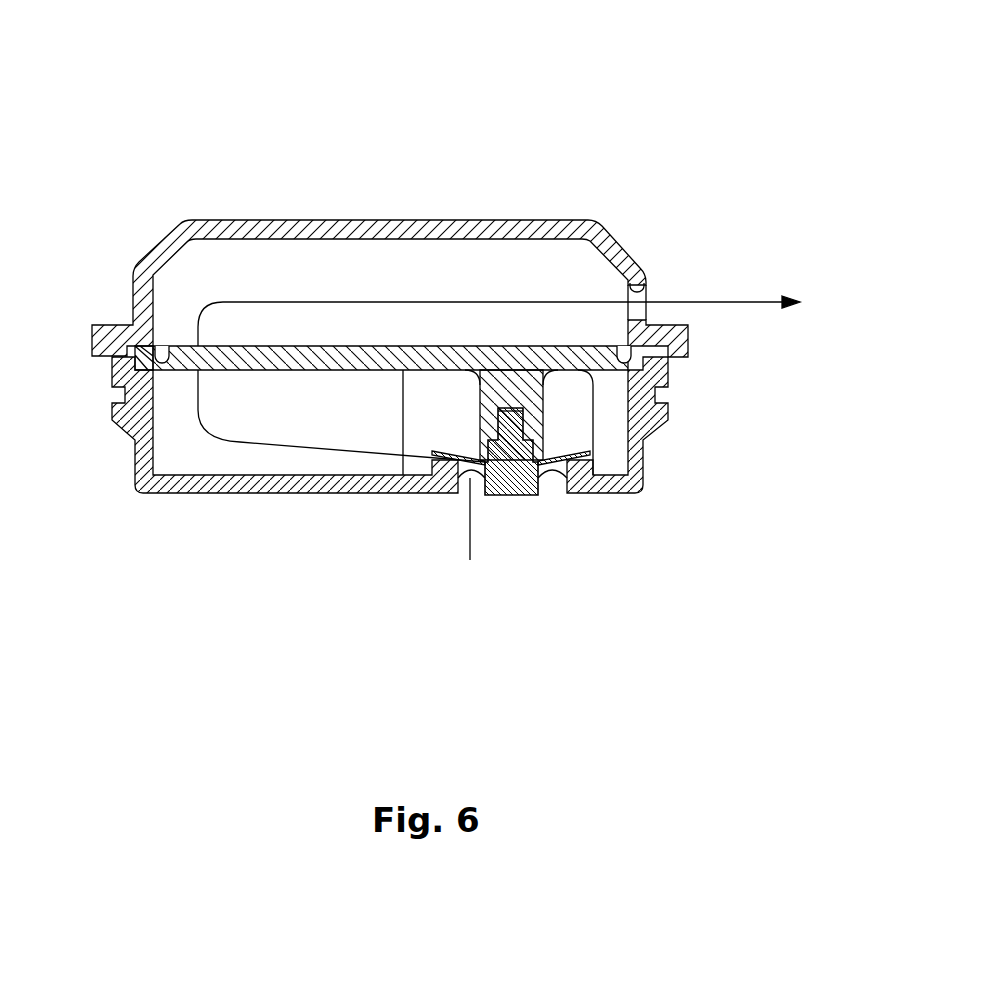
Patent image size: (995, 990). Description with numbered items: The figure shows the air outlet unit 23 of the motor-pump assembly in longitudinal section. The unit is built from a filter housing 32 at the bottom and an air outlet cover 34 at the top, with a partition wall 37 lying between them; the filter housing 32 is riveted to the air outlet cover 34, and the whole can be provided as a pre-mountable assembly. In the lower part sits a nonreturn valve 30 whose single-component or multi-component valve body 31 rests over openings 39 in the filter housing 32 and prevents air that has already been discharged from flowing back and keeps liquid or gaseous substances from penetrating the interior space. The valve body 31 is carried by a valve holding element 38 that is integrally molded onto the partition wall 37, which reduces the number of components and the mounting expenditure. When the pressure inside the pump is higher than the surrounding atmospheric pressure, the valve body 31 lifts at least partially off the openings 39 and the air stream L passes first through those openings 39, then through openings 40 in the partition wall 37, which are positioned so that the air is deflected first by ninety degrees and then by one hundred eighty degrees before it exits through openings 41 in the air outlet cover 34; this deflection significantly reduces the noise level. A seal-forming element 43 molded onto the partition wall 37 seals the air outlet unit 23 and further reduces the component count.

The air outlet unit 23 is at (590, 134).
The nonreturn valve 30 is at (510, 439).
The valve body 31 is at (540, 458).
The filter housing 32 is at (200, 497).
The air outlet cover 34 is at (345, 232).
The partition wall 37 is at (356, 352).
The valve holding element 38 is at (532, 429).
The openings 39 is at (555, 497).
The openings 40 is at (190, 347).
The openings 41 is at (648, 292).
The seal-forming element 43 is at (140, 365).
The air stream L is at (470, 547).